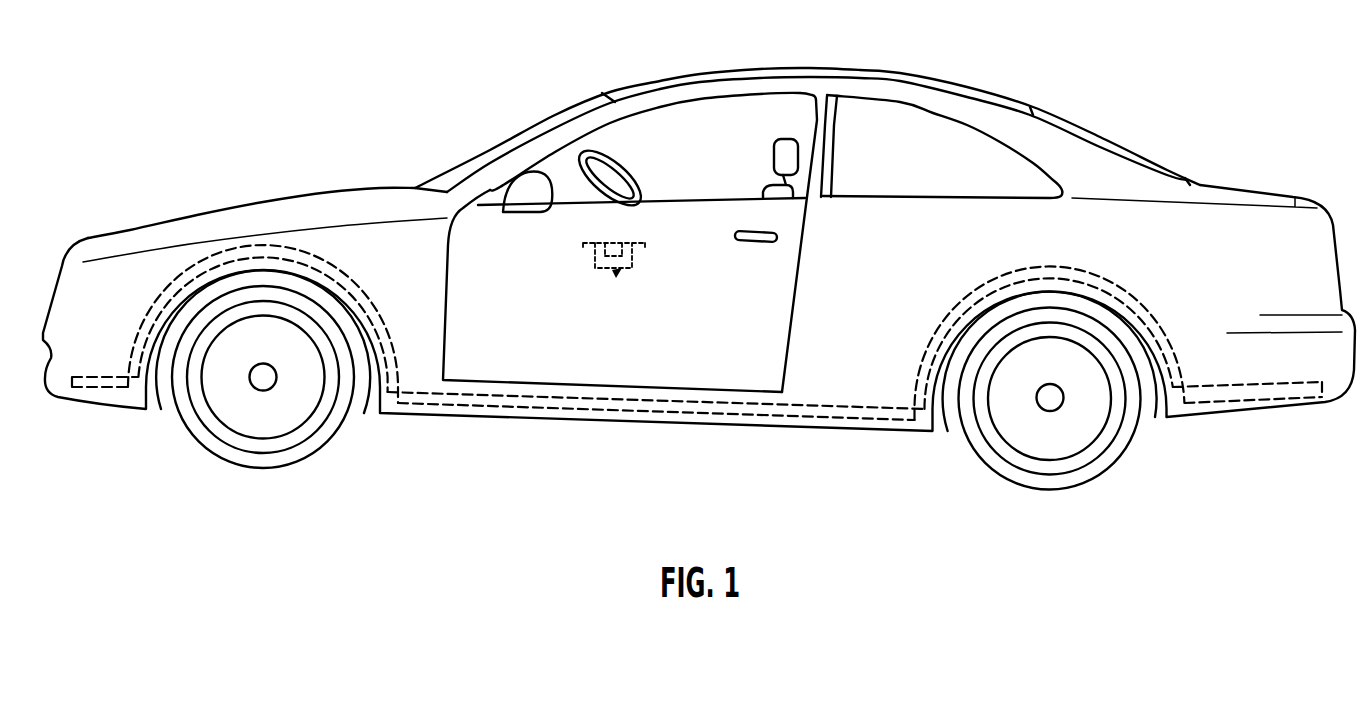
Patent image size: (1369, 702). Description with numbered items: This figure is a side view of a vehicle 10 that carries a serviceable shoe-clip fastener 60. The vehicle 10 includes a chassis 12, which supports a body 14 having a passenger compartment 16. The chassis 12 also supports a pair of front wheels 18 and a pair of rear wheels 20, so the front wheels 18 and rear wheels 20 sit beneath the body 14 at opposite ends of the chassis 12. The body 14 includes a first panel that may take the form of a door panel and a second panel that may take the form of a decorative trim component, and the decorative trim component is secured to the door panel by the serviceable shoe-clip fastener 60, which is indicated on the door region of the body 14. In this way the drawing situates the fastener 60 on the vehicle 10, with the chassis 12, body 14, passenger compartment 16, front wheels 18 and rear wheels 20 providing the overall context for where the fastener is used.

The vehicle 10 is at (565, 75).
The chassis 12 is at (616, 408).
The body 14 is at (835, 90).
The passenger compartment 16 is at (700, 125).
The front wheels 18 is at (183, 453).
The rear wheels 20 is at (1128, 478).
The serviceable shoe-clip fastener 60 is at (614, 280).